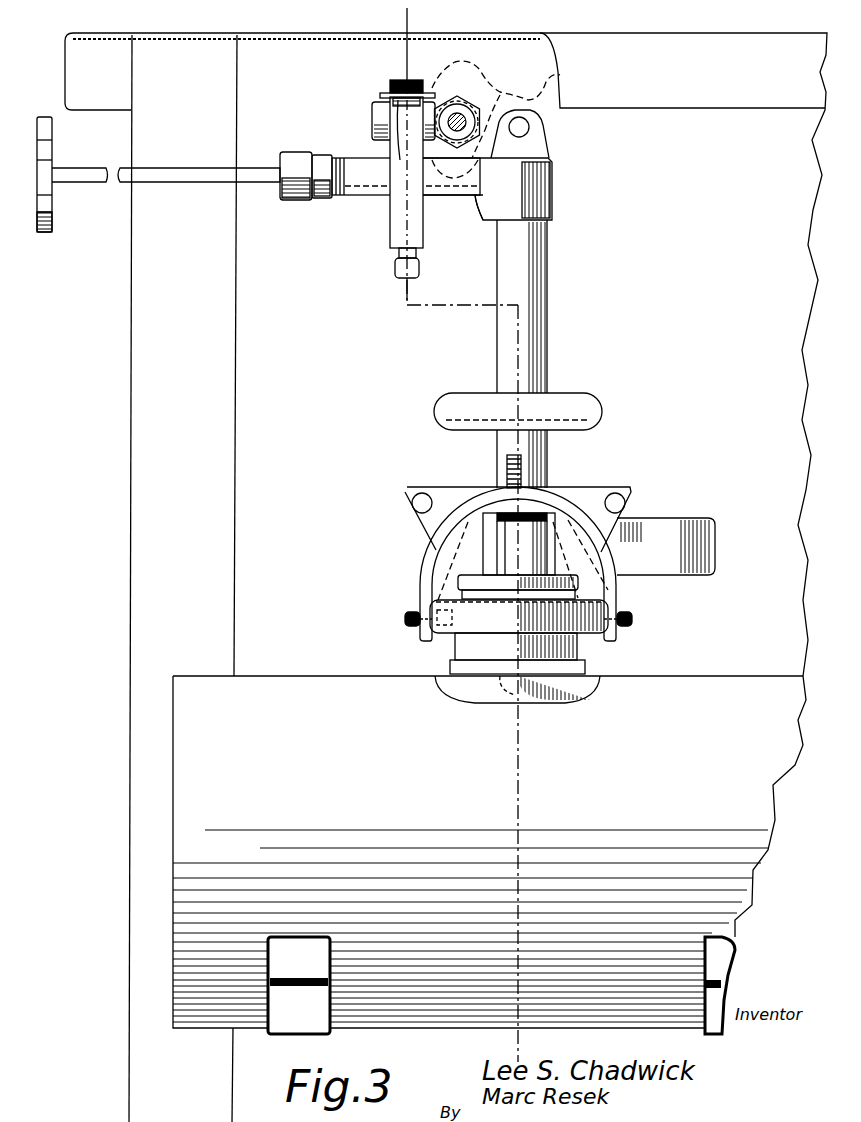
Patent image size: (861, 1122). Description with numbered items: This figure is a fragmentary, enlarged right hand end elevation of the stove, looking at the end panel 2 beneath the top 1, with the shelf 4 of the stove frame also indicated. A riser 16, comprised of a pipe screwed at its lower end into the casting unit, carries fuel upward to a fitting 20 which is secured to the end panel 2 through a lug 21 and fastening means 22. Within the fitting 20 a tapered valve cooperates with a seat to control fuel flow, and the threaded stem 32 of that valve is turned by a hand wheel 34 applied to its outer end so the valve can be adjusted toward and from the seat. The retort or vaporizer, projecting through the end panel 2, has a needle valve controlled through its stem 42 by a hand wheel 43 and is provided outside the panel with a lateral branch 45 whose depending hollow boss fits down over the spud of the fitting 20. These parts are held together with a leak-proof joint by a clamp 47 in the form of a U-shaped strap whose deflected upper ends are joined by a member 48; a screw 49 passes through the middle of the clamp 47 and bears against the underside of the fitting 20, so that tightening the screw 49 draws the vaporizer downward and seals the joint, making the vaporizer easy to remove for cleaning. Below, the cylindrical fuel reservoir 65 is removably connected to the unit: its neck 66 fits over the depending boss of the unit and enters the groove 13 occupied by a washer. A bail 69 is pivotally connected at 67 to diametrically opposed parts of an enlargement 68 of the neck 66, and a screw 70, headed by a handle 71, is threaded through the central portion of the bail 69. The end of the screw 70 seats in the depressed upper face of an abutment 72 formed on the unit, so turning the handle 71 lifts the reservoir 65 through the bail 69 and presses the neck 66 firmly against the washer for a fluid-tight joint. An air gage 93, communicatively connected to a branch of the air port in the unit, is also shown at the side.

The top 1 is at (588, 36).
The end panel 2 is at (258, 462).
The shelf 4 is at (421, 18).
The groove 13 is at (470, 580).
The riser 16 is at (541, 280).
The fitting 20 is at (555, 188).
The lug 21 is at (542, 148).
The fastening means 22 is at (531, 127).
The stem 32 is at (208, 184).
The hand wheel 34 is at (52, 213).
The stem 42 is at (461, 119).
The hand wheel 43 is at (540, 95).
The lateral branch 45 is at (372, 118).
The clamp 47 is at (400, 232).
The member 48 is at (388, 96).
The screw 49 is at (394, 269).
The fuel reservoir 65 is at (713, 690).
The neck 66 is at (577, 651).
The pivot 67 is at (405, 619).
The enlargement 68 is at (519, 616).
The bail 69 is at (604, 578).
The screw 70 is at (522, 466).
The handle 71 is at (572, 402).
The abutment 72 is at (494, 546).
The air gage 93 is at (688, 518).